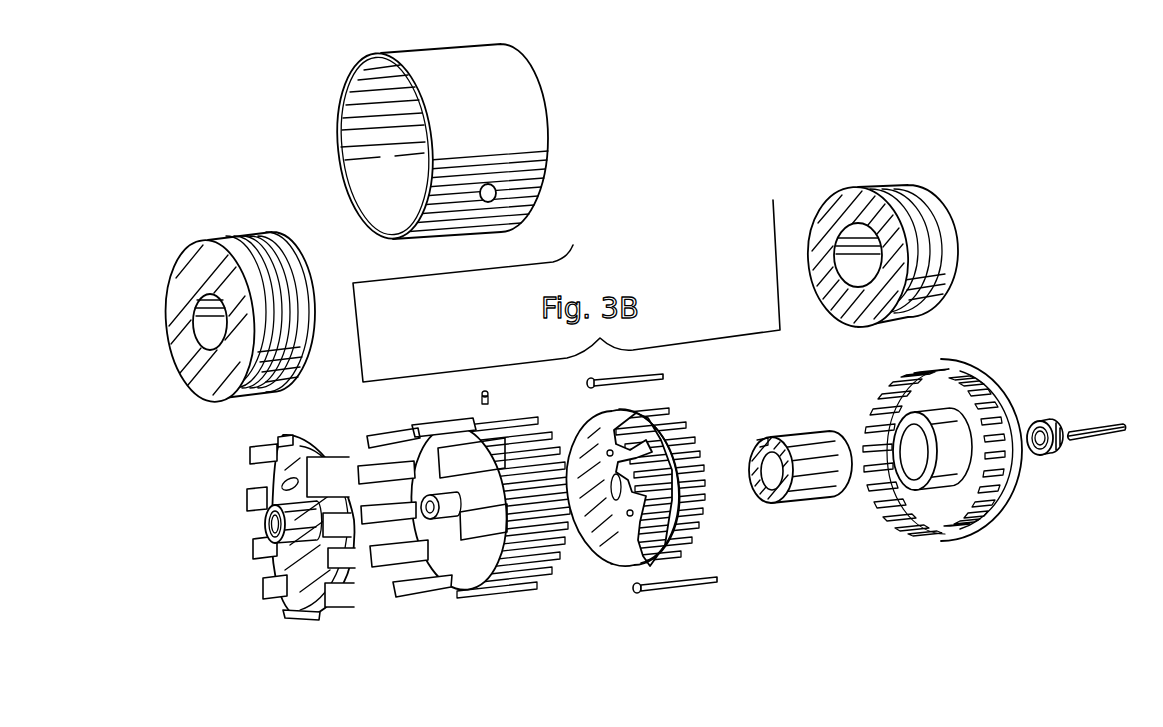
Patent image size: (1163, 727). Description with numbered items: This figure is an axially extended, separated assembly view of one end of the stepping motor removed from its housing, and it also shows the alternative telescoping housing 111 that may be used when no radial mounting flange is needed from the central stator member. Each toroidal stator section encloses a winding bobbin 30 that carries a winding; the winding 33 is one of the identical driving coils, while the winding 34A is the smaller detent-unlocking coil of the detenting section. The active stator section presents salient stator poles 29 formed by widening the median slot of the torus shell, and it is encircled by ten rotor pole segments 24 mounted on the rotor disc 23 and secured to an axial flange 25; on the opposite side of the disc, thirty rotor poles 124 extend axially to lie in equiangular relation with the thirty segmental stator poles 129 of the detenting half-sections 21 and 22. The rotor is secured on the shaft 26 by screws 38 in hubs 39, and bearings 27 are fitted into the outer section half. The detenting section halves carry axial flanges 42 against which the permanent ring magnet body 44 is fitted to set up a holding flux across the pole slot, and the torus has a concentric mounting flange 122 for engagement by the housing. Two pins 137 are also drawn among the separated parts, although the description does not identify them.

The telescoping housing 111 is at (540, 135).
The winding bobbin 30 is at (537, 272).
The winding 33 is at (296, 300).
The winding 34A is at (882, 190).
The salient stator poles 29 is at (252, 464).
The rotor pole segments 24 is at (467, 506).
The rotor poles 124 is at (528, 436).
The rotor disc 23 is at (462, 562).
The axial flange 25 is at (498, 572).
The hub 39 is at (424, 512).
The screw 38 is at (492, 397).
The segmental stator poles 129 is at (678, 424).
The left half of detenting section 21 is at (648, 538).
The pin 137 is at (634, 388).
The permanent ring magnet body 44 is at (808, 443).
The right half of detenting section 22 is at (951, 446).
The mounting flange 122 is at (980, 389).
The axial flanges 42 is at (868, 418).
The bearings 27 is at (1052, 425).
The shaft 26 is at (1110, 424).